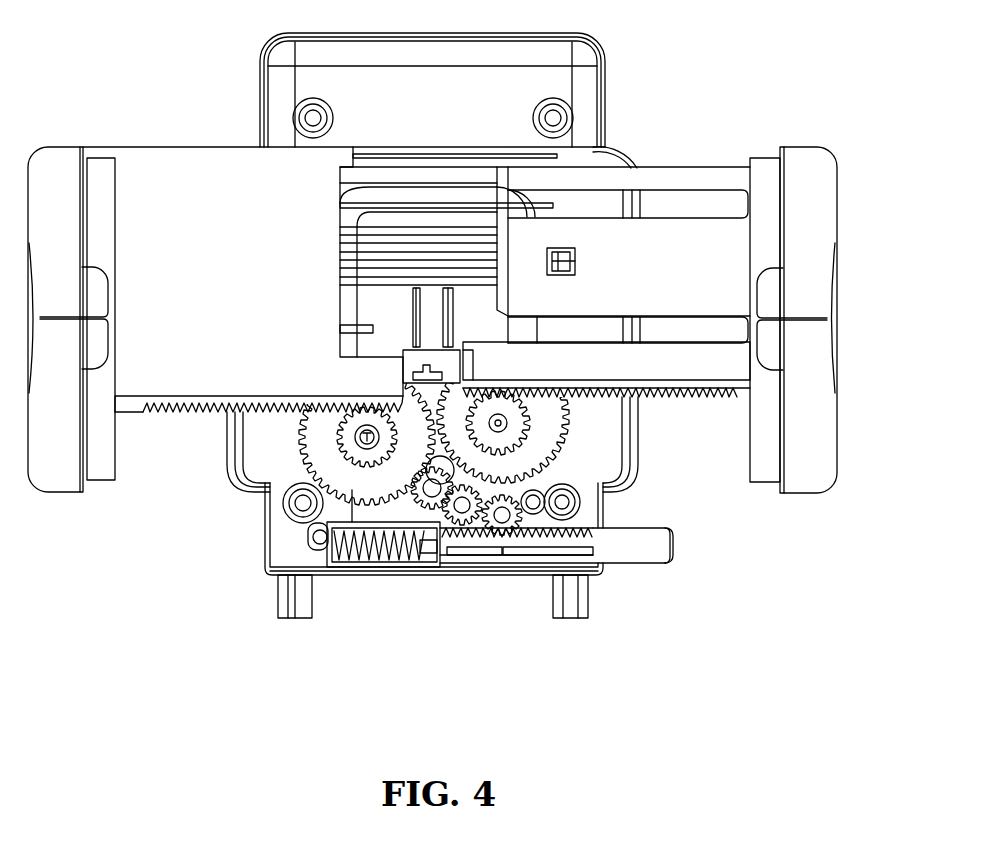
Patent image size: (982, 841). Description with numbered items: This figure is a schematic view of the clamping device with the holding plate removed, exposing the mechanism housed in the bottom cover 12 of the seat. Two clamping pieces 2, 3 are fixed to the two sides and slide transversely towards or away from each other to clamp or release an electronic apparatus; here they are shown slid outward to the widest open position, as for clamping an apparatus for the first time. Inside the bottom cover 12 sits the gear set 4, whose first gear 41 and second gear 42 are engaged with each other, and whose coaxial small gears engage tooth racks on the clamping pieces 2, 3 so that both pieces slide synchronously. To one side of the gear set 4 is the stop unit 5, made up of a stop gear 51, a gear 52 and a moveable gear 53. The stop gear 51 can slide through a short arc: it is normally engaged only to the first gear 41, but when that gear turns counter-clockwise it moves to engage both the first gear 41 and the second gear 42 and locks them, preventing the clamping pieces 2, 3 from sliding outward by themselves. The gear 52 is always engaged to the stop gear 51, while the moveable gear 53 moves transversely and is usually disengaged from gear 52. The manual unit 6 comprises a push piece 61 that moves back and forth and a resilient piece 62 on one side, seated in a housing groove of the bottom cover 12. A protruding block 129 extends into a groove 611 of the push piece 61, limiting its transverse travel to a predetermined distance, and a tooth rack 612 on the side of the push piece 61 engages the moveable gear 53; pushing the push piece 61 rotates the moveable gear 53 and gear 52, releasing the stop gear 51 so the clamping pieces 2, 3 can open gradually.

The clamping piece 2 is at (188, 157).
The bottom cover 12 is at (518, 83).
The clamping piece 3 is at (664, 178).
The gear set 4 is at (153, 498).
The first gear 41 is at (310, 447).
The second gear 42 is at (553, 412).
The stop unit 5 is at (562, 486).
The stop gear 51 is at (455, 470).
The gear 52 is at (470, 482).
The moveable gear 53 is at (520, 504).
The manual unit 6 is at (490, 622).
The push piece 61 is at (532, 604).
The resilient piece 62 is at (378, 566).
The groove 611 is at (570, 552).
The tooth rack 612 is at (537, 542).
The protruding block 129 is at (470, 552).